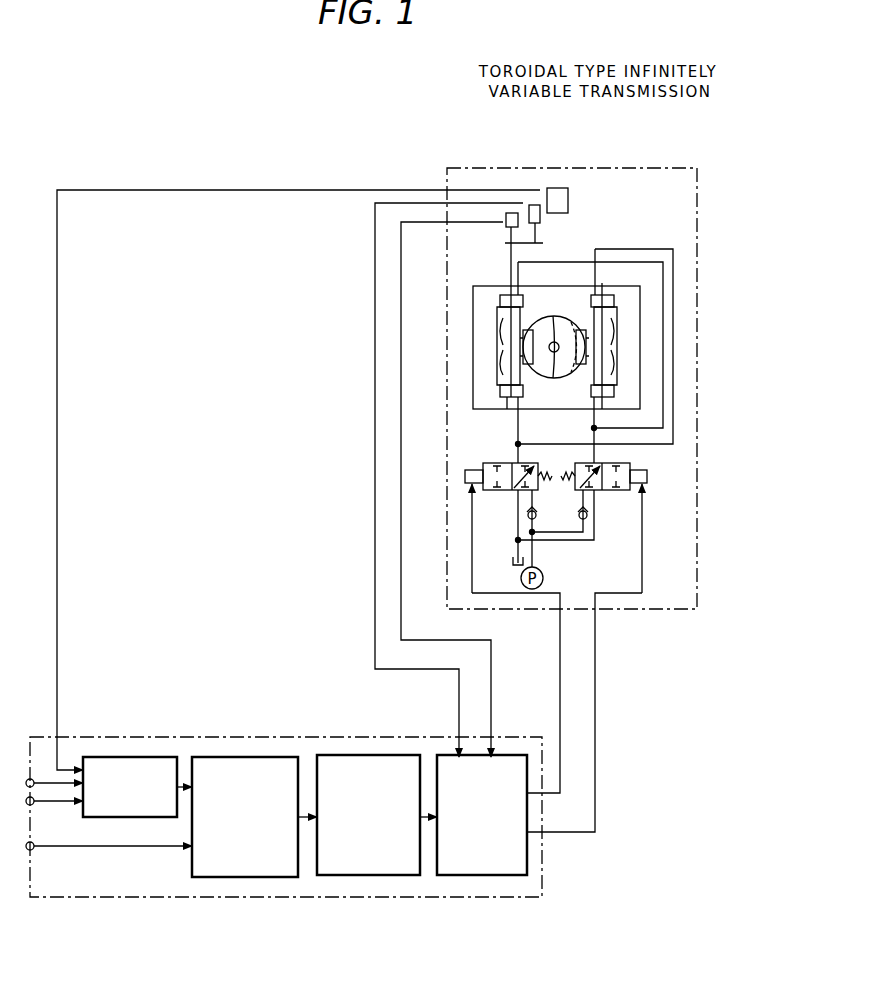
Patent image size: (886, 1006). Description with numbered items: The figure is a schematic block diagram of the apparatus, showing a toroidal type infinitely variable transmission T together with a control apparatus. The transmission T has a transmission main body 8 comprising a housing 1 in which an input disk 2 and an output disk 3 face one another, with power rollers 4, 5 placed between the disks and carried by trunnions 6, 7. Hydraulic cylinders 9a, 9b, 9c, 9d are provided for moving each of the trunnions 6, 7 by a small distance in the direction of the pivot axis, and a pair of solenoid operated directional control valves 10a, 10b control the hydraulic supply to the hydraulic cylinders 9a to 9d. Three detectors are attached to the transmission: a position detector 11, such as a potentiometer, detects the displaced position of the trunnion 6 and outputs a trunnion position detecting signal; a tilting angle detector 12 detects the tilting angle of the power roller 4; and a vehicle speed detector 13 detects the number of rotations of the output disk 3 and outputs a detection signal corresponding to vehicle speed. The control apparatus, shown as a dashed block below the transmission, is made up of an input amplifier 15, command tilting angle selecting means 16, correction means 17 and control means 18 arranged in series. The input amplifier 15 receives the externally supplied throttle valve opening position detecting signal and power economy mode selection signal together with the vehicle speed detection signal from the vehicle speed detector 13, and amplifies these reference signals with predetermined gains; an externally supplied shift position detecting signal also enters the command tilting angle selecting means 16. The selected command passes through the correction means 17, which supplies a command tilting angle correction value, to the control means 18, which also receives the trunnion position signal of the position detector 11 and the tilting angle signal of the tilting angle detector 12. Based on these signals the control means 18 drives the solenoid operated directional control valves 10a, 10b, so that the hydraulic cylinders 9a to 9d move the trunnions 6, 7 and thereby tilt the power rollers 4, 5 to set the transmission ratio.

The toroidal type infinitely variable transmission T is at (641, 168).
The housing 1 is at (473, 320).
The input disk 2 is at (545, 372).
The output disk 3 is at (566, 372).
The power roller 4 is at (528, 328).
The power roller 5 is at (586, 329).
The trunnion 6 is at (500, 385).
The trunnion 7 is at (613, 380).
The transmission main body 8 is at (471, 367).
The hydraulic cylinder 9a is at (507, 399).
The hydraulic cylinder 9b is at (503, 293).
The hydraulic cylinder 9c is at (618, 405).
The hydraulic cylinder 9d is at (612, 293).
The solenoid operated directional control valve 10a is at (494, 491).
The solenoid operated directional control valve 10b is at (612, 491).
The position detector 11 is at (505, 224).
The tilting angle detector 12 is at (541, 214).
The vehicle speed detector 13 is at (569, 198).
The input amplifier 15 is at (125, 757).
The command tilting angle selecting means 16 is at (246, 757).
The correction means 17 is at (370, 755).
The control means 18 is at (483, 877).